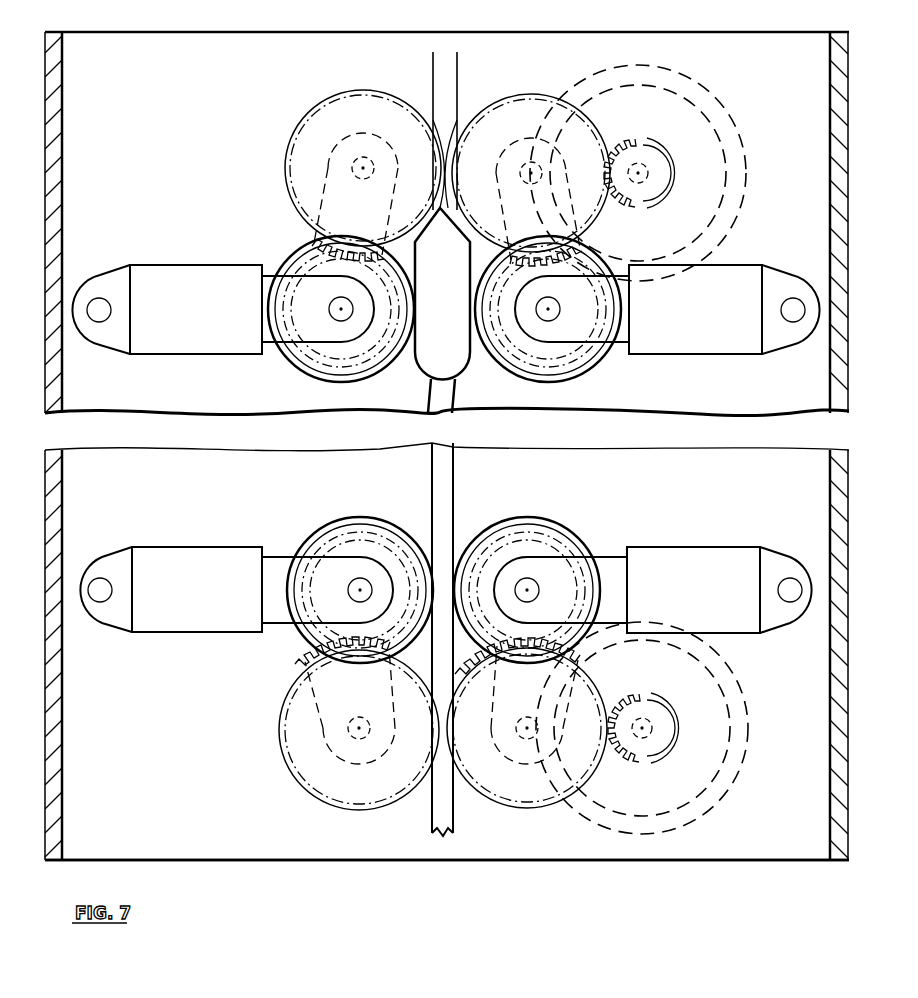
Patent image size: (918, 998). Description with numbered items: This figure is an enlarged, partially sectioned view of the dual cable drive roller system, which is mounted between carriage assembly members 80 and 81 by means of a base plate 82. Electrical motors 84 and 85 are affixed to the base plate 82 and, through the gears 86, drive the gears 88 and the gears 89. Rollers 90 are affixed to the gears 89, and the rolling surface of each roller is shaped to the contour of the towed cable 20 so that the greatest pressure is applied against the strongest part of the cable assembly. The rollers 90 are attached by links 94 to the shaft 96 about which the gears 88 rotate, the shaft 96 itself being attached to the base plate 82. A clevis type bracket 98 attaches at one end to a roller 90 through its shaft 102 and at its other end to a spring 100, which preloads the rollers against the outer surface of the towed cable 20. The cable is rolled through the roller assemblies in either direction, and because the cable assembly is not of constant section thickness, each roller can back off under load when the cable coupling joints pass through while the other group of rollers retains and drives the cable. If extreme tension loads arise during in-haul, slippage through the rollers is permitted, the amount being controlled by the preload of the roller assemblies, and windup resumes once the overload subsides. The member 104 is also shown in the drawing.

The towed cable 20 is at (429, 523).
The carriage assembly member 80 is at (50, 268).
The carriage assembly member 81 is at (845, 249).
The base plate 82 is at (154, 801).
The electrical motor 84 is at (707, 753).
The electrical motor 85 is at (708, 132).
The gear 86 is at (652, 168).
The gear 88 is at (304, 118).
The gear 89 is at (357, 364).
The roller 90 is at (386, 352).
The link 94 is at (579, 250).
The shaft 96 is at (361, 155).
The clevis type bracket 98 is at (622, 336).
The spring 100 is at (178, 283).
The shaft 102 is at (336, 318).
The mandrel 104 is at (462, 273).